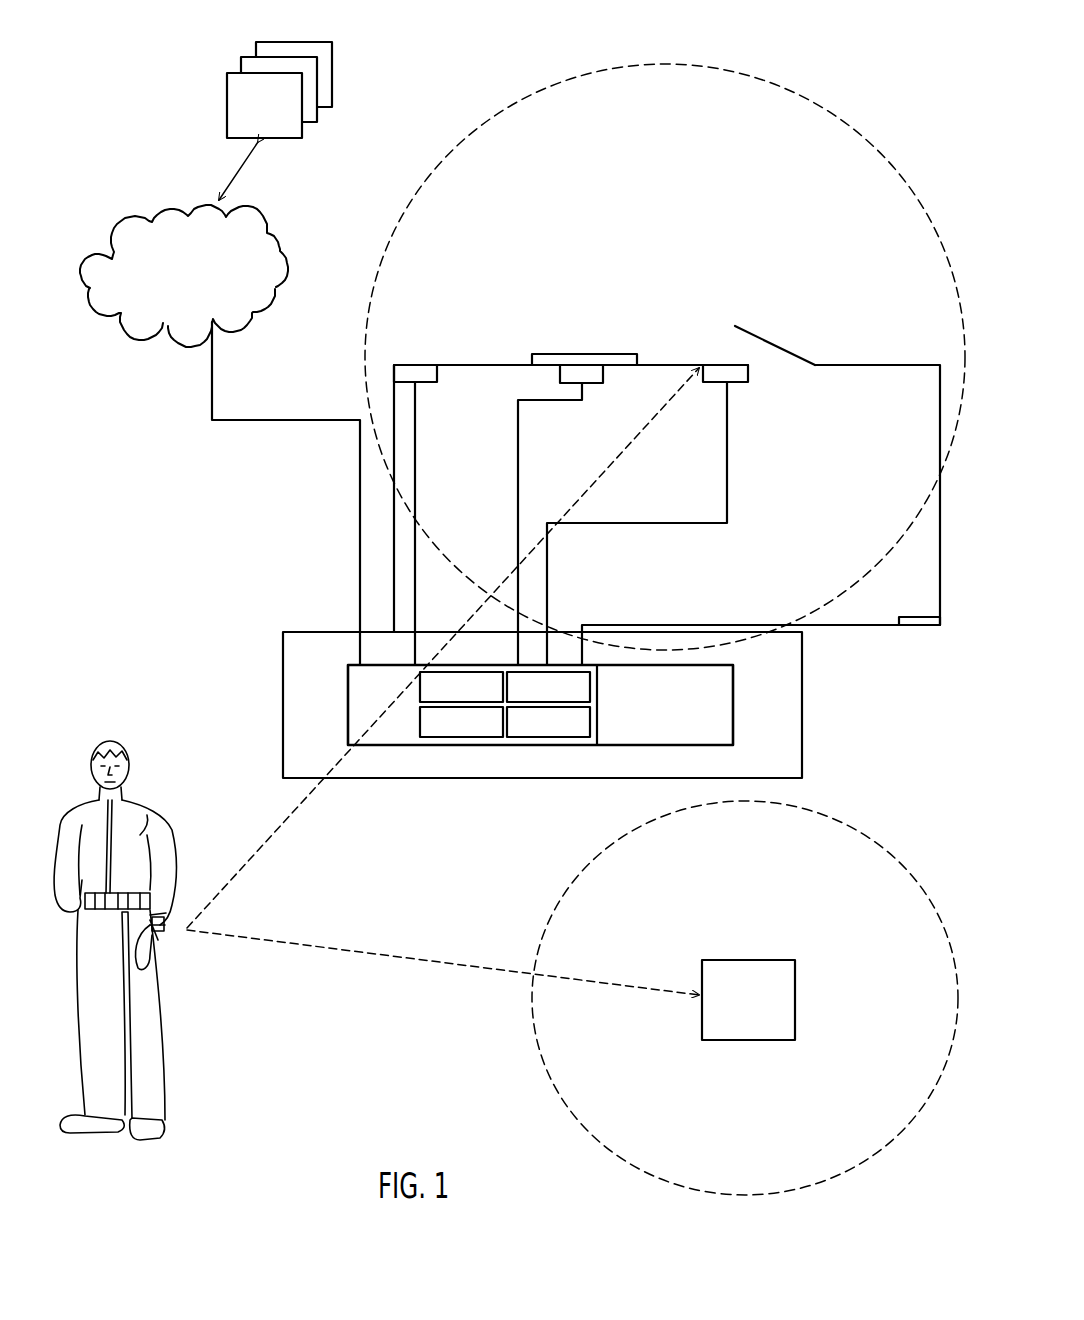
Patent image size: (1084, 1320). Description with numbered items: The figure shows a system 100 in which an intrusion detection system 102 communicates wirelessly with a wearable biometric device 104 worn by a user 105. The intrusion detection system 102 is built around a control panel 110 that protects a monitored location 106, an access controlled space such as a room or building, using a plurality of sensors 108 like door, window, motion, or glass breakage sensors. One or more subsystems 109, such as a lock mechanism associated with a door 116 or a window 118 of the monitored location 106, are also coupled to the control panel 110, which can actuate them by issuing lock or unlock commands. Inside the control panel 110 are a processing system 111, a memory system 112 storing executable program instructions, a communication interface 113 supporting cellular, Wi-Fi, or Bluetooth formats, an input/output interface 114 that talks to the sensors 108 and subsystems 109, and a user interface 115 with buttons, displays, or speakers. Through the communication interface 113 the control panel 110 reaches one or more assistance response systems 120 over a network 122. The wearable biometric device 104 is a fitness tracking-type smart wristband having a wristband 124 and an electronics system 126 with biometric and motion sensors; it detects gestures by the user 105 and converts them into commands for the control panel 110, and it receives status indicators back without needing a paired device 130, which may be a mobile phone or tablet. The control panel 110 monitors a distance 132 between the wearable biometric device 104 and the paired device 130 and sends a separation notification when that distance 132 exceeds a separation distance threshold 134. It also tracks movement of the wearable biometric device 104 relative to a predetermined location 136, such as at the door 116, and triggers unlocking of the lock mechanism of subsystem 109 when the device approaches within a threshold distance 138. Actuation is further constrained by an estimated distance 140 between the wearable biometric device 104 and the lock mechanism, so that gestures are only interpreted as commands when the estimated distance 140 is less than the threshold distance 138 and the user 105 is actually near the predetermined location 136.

The system 100 is at (233, 576).
The intrusion detection system 102 is at (790, 674).
The wearable biometric device 104 is at (168, 930).
The user 105 is at (88, 808).
The monitored location 106 is at (920, 400).
The sensors 108 is at (437, 381).
The subsystems 109 is at (737, 383).
The control panel 110 is at (392, 703).
The processing system 111 is at (478, 702).
The memory system 112 is at (478, 737).
The communication interface 113 is at (565, 702).
The input/output interface 114 is at (565, 737).
The user interface 115 is at (684, 718).
The door 116 is at (790, 350).
The window 118 is at (540, 354).
The assistance response systems 120 is at (280, 123).
The network 122 is at (206, 290).
The wristband 124 is at (167, 958).
The electronics system 126 is at (172, 918).
The paired device 130 is at (748, 1000).
The distance 132 is at (398, 962).
The separation distance threshold 134 is at (577, 880).
The predetermined location 136 is at (723, 345).
The threshold distance 138 is at (498, 114).
The estimated distance 140 is at (243, 862).